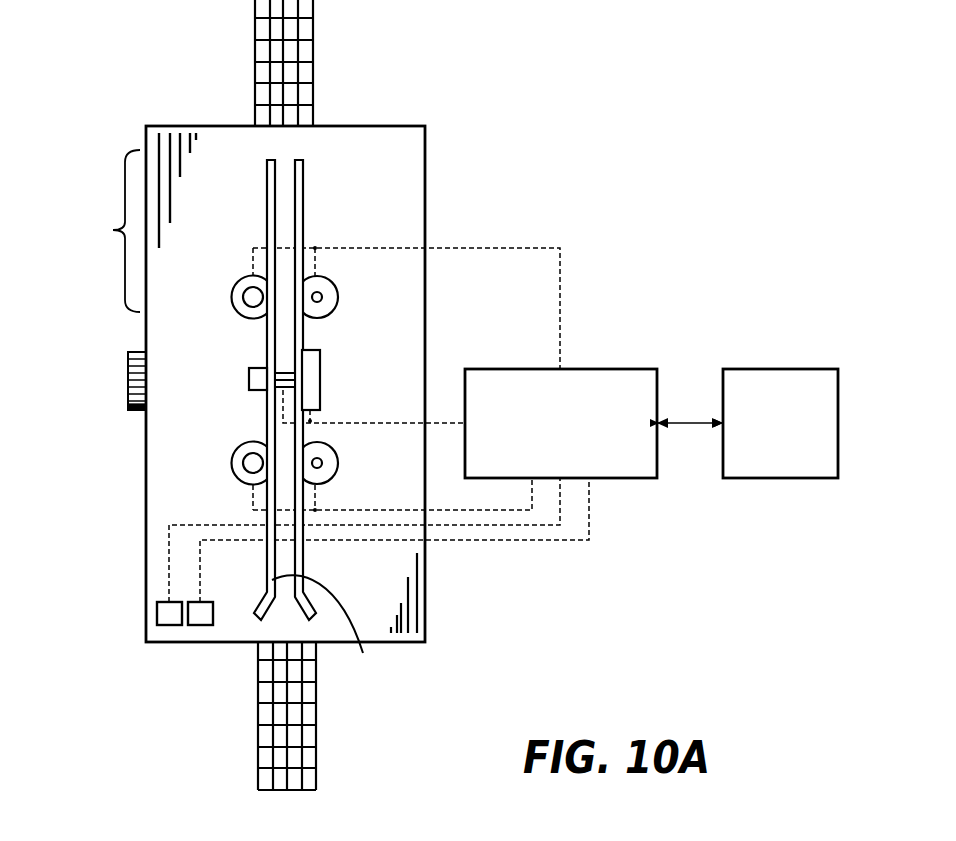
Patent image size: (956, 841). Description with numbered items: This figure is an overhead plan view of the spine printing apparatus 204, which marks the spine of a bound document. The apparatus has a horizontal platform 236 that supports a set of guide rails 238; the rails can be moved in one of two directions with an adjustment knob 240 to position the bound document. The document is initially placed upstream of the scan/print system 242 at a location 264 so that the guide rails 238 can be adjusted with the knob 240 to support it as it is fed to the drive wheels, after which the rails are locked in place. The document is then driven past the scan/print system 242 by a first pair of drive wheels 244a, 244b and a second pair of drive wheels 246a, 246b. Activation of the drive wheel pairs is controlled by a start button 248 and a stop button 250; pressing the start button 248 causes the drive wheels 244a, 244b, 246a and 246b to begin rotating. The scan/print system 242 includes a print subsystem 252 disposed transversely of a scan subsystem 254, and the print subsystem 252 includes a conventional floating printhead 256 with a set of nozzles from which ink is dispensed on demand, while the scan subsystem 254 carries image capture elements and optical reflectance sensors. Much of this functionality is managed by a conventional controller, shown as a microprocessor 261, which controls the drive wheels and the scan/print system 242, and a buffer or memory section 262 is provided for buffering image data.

The spine printing apparatus 204 is at (333, 395).
The horizontal platform 236 is at (426, 192).
The guide rails 238 is at (337, 630).
The adjustment knob 240 is at (125, 392).
The scan/print system 242 is at (356, 350).
The drive wheel 244a is at (233, 296).
The drive wheel 244b is at (236, 446).
The drive wheel 246a is at (333, 287).
The drive wheel 246b is at (334, 458).
The start button 248 is at (155, 613).
The stop button 250 is at (197, 617).
The print subsystem 252 is at (242, 383).
The scan subsystem 254 is at (332, 394).
The floating printhead 256 is at (276, 386).
The microprocessor 261 is at (594, 372).
The memory section 262 is at (778, 372).
The location 264 is at (105, 241).